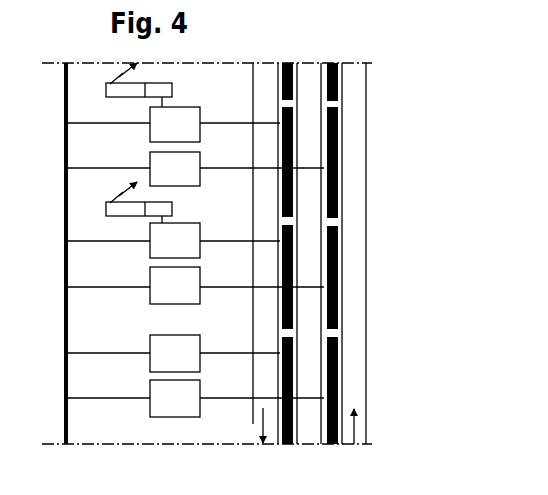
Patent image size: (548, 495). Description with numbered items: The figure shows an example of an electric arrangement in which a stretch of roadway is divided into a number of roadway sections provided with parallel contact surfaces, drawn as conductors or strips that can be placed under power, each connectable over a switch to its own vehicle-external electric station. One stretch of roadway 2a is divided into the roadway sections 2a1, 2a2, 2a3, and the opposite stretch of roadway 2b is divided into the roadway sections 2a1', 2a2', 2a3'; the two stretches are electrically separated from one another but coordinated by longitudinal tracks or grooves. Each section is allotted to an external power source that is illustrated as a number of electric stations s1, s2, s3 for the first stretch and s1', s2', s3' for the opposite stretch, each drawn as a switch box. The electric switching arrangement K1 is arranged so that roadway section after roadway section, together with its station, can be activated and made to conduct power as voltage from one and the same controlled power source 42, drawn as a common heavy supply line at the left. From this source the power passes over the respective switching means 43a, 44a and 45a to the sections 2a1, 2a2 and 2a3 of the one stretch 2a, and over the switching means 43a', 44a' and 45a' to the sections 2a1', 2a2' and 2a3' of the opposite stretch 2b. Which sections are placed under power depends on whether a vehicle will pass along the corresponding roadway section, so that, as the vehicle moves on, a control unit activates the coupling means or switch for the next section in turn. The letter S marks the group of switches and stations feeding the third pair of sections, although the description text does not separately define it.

The roadway stretch 2a is at (251, 238).
The opposite roadway stretch 2b is at (376, 253).
The roadway section 2a1 is at (249, 140).
The roadway section 2a1' is at (379, 140).
The roadway section 2a2 is at (249, 262).
The roadway section 2a2' is at (379, 277).
The roadway section 2a3 is at (249, 377).
The roadway section 2a3' is at (375, 390).
The controlled power source 42 is at (64, 183).
The switching means 43a is at (173, 136).
The switching means 43a' is at (195, 156).
The switching means 44a is at (173, 253).
The switching means 44a' is at (195, 275).
The switching means 45a is at (173, 338).
The switching means 45a' is at (195, 382).
The electric switching arrangement K1 is at (45, 91).
The switch group S is at (105, 306).
The electric station s1 is at (151, 102).
The electric station s1' is at (190, 161).
The electric station s2 is at (151, 220).
The electric station s2' is at (190, 279).
The electric station s3 is at (175, 341).
The electric station s3' is at (189, 392).